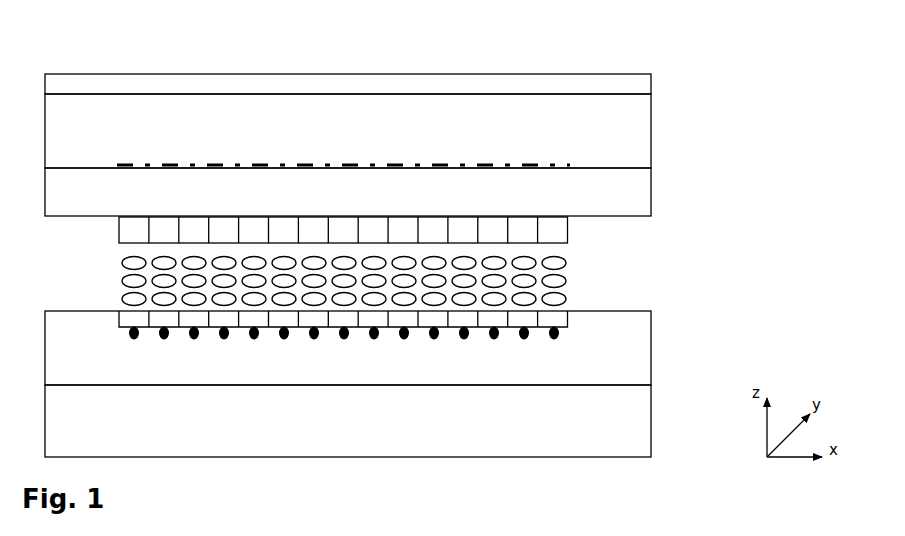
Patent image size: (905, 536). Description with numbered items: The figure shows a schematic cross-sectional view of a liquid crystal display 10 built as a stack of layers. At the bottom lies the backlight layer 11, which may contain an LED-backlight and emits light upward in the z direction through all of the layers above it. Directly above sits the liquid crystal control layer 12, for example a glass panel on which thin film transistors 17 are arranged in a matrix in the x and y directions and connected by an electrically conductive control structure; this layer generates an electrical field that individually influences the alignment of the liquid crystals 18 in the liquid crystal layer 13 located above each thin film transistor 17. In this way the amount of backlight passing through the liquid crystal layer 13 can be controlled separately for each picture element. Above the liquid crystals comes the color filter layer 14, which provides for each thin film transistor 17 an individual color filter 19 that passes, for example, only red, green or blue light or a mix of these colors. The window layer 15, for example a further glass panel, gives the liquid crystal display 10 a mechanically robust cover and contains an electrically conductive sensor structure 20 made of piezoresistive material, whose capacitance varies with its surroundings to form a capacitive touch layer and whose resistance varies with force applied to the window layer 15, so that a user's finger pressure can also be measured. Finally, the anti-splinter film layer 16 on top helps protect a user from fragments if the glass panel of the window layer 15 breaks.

The liquid crystal display 10 is at (252, 62).
The backlight layer 11 is at (651, 418).
The liquid crystal control layer 12 is at (651, 344).
The liquid crystal layer 13 is at (390, 281).
The color filter layer 14 is at (651, 208).
The window layer 15 is at (651, 136).
The anti-splinter film layer 16 is at (651, 82).
The thin film transistors 17 is at (123, 330).
The liquid crystals 18 is at (124, 280).
The color filter 19 is at (119, 221).
The electrically conductive sensor structure 20 is at (140, 163).